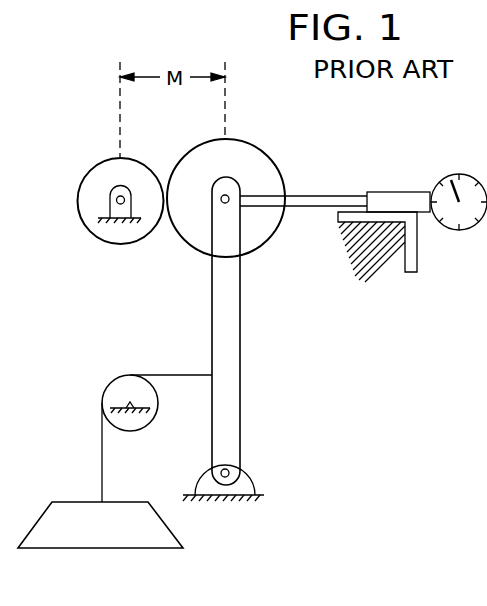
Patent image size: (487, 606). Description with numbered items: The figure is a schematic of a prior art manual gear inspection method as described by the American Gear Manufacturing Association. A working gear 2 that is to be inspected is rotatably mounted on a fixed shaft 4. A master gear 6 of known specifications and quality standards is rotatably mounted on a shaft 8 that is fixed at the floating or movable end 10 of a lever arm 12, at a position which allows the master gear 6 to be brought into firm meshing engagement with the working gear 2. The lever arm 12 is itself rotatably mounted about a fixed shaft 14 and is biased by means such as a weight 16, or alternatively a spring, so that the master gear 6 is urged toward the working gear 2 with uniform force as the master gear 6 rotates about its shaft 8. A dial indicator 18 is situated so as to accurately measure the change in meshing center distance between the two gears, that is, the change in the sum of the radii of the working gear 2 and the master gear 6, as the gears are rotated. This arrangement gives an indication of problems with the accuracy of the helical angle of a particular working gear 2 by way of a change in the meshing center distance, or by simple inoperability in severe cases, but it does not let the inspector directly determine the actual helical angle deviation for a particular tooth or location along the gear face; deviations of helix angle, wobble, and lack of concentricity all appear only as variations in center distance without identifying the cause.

The working gear 2 is at (85, 171).
The fixed shaft 4 is at (112, 197).
The master gear 6 is at (268, 155).
The shaft 8 is at (222, 203).
The floating or movable end 10 is at (248, 180).
The lever arm 12 is at (240, 322).
The fixed shaft 14 is at (230, 476).
The weight 16 is at (84, 502).
The dial indicator 18 is at (392, 192).